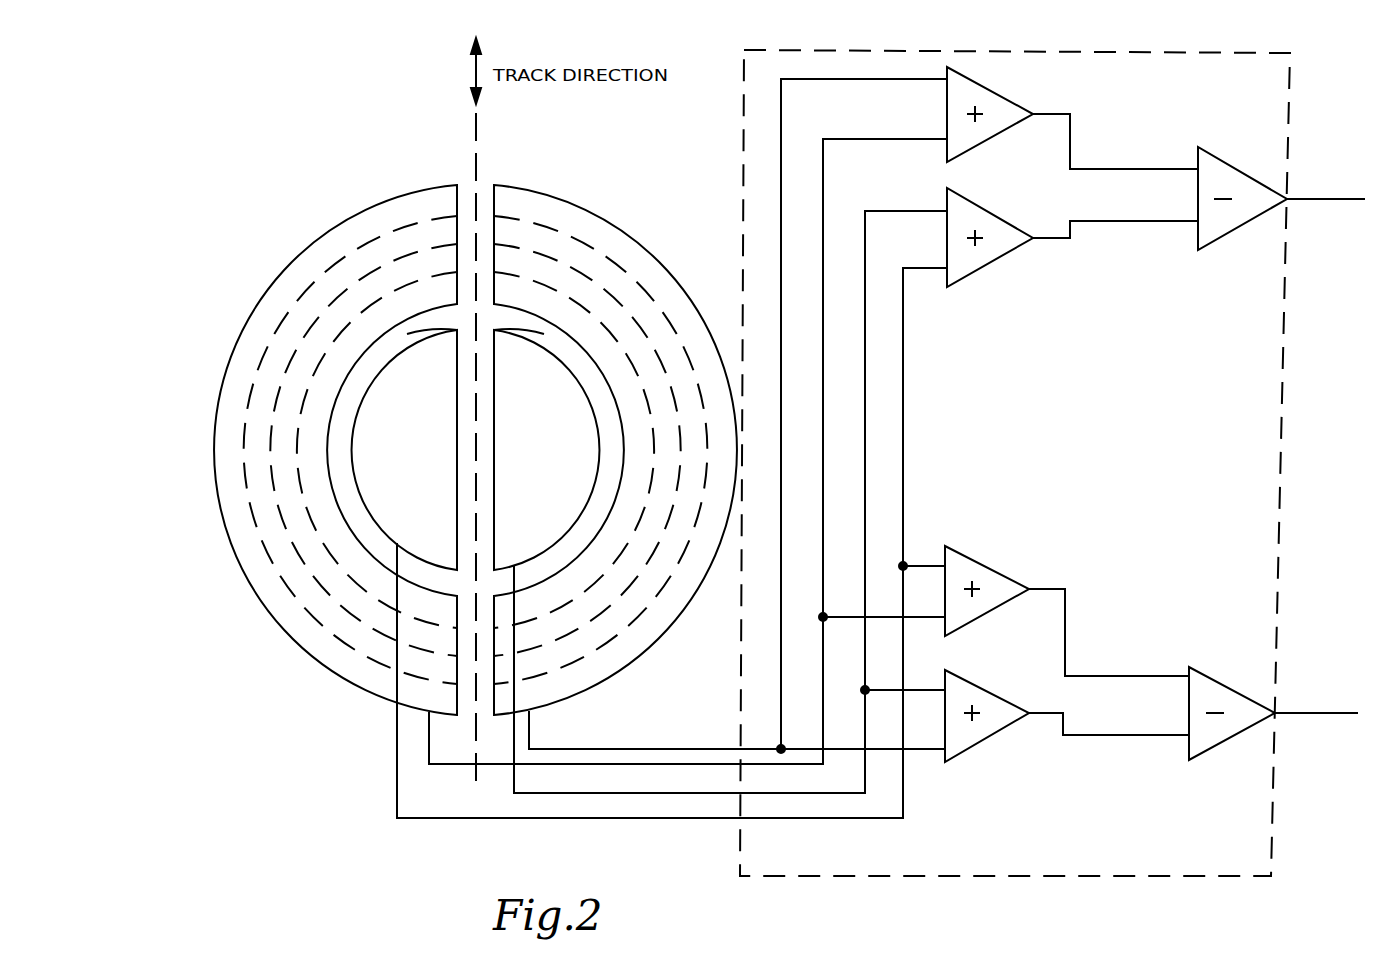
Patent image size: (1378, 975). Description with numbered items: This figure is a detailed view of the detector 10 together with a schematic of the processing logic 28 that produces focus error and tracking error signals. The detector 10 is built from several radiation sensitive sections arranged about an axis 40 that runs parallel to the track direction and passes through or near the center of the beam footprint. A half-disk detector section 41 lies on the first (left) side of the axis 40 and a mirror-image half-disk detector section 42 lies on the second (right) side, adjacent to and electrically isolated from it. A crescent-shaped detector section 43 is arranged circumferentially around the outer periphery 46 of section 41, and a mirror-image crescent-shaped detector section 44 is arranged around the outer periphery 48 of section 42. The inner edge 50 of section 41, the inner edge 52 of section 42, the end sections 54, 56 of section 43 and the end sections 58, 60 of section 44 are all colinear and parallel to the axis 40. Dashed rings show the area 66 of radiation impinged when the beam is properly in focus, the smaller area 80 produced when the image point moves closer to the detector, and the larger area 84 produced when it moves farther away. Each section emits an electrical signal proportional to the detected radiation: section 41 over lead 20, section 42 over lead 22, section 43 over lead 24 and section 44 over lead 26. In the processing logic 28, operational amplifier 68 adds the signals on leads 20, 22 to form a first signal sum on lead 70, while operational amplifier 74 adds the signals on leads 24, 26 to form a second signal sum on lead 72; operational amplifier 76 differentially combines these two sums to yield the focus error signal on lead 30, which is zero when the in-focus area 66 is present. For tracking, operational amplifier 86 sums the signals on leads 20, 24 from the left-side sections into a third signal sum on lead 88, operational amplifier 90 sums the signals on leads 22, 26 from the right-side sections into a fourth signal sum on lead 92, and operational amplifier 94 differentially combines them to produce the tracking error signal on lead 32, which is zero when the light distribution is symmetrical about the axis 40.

The detector 10 is at (268, 192).
The lead 20 is at (434, 820).
The lead 22 is at (512, 780).
The lead 24 is at (432, 767).
The lead 26 is at (632, 750).
The processing logic 28 is at (1027, 877).
The lead 30 is at (1332, 202).
The lead 32 is at (1320, 716).
The axis 40 is at (478, 112).
The detector section 41 is at (404, 450).
The detector section 42 is at (546, 450).
The detector section 43 is at (210, 460).
The detector section 44 is at (768, 452).
The outer periphery 46 is at (412, 342).
The outer periphery 48 is at (533, 342).
The inner edge 50 is at (455, 482).
The inner edge 52 is at (496, 482).
The end section 54 is at (458, 178).
The end section 56 is at (457, 712).
The end section 58 is at (493, 178).
The end section 60 is at (494, 712).
The area 66 is at (577, 279).
The operational amplifier 68 is at (988, 270).
The lead 70 is at (1072, 232).
The lead 72 is at (1072, 126).
The operational amplifier 74 is at (998, 130).
The operational amplifier 76 is at (1224, 240).
The area of radiation 80 is at (528, 278).
The area of radiation 84 is at (637, 292).
The operational amplifier 86 is at (985, 742).
The lead 88 is at (1077, 737).
The operational amplifier 90 is at (1000, 605).
The lead 92 is at (1067, 618).
The operational amplifier 94 is at (1218, 743).